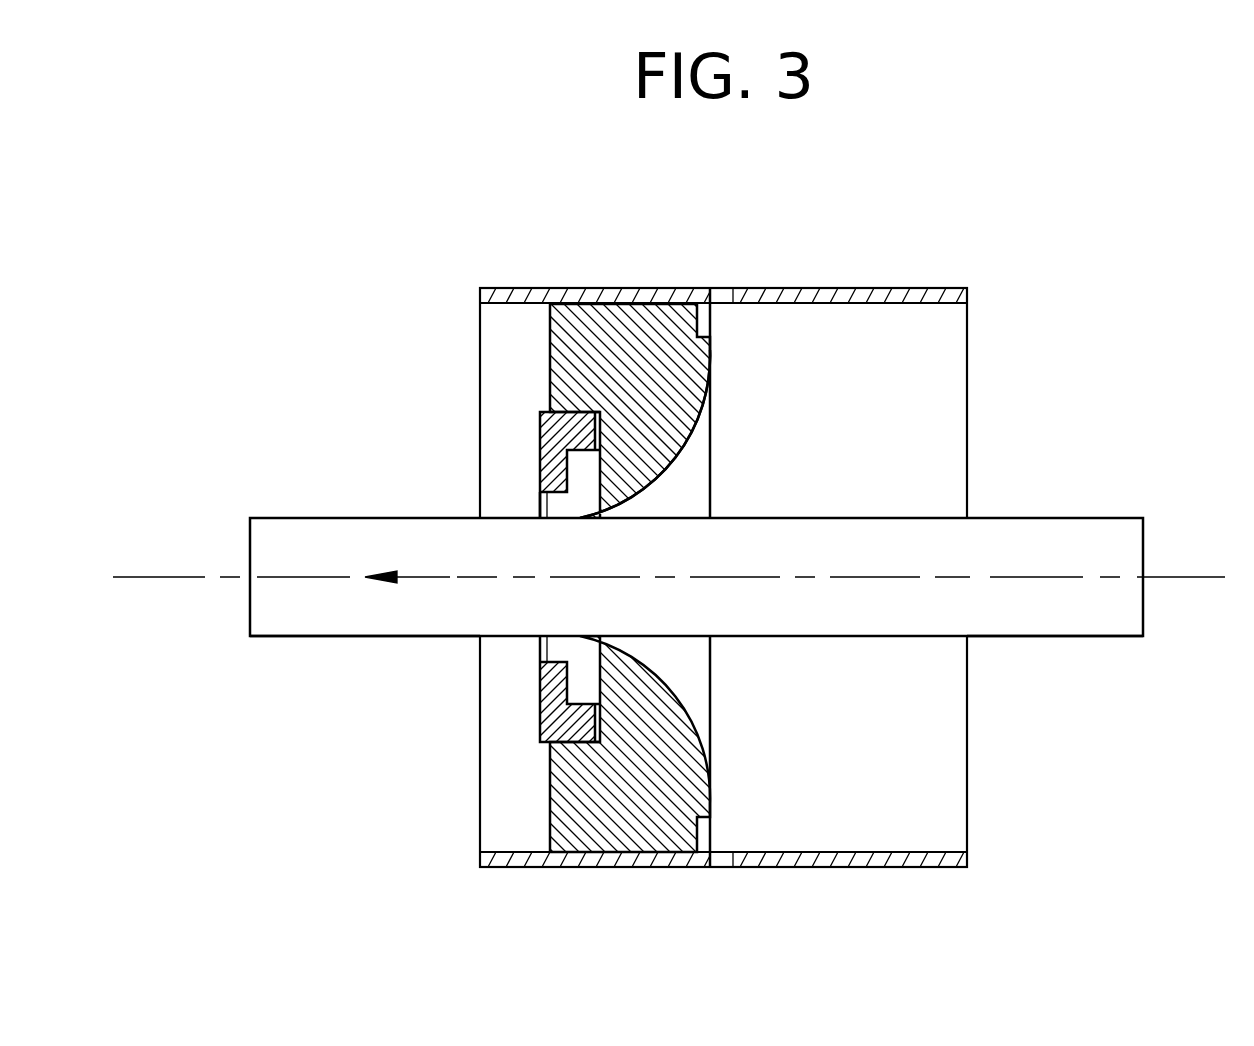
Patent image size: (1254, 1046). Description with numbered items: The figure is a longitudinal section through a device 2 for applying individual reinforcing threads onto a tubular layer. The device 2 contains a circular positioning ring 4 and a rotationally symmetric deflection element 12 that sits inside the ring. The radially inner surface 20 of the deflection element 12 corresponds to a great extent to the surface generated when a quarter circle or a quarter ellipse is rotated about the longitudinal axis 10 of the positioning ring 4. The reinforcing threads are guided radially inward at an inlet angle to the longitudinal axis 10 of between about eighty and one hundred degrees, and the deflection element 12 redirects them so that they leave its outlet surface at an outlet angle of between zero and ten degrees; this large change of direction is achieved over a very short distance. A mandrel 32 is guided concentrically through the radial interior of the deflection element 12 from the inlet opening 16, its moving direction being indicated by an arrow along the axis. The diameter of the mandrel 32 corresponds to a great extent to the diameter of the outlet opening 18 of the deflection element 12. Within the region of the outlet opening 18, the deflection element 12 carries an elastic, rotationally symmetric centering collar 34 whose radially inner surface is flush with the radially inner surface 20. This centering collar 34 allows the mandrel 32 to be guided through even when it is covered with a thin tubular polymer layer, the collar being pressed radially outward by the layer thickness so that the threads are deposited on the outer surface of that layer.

The device 2 is at (855, 290).
The positioning ring 4 is at (770, 295).
The longitudinal axis 10 is at (1072, 577).
The deflection element 12 is at (568, 343).
The inlet opening 16 is at (712, 693).
The outlet opening 18 is at (507, 613).
The radially inner surface 20 is at (700, 452).
The mandrel 32 is at (1003, 610).
The centering collar 34 is at (538, 515).